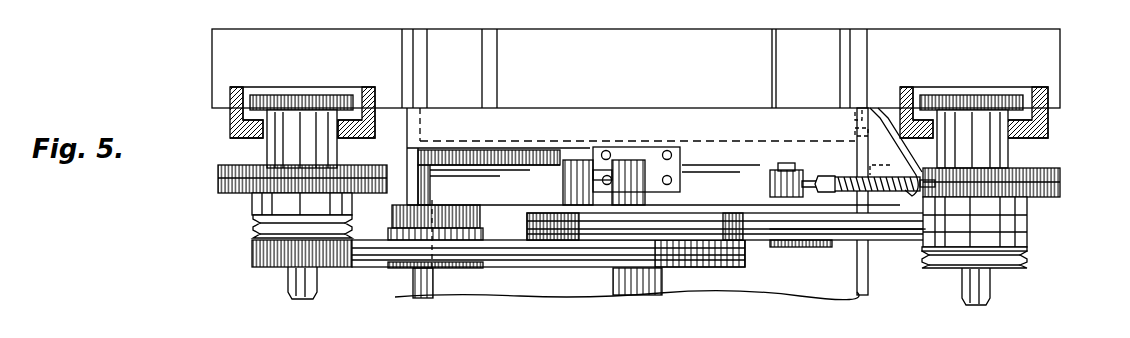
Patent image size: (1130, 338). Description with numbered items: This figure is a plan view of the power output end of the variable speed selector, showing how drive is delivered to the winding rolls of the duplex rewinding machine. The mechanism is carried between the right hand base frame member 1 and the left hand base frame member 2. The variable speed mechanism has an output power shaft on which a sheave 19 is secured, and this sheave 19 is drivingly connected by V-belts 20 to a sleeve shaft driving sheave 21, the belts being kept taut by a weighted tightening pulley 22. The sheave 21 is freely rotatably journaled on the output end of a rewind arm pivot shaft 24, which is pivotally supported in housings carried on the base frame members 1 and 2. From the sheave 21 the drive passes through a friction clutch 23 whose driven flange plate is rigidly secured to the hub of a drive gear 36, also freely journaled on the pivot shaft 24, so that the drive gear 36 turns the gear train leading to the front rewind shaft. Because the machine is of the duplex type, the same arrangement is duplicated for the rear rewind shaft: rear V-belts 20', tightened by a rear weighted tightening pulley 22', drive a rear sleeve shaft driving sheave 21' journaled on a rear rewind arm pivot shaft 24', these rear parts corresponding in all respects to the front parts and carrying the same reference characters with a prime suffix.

The base frame member 1 is at (1050, 50).
The base frame member 2 is at (1073, 180).
The drive gear 36 is at (277, 152).
The friction clutch 23 is at (236, 194).
The sleeve shaft driving sheave 21 is at (288, 268).
The rewind arm pivot shaft 24 is at (286, 287).
The weighted tightening pulley 22 is at (421, 251).
The V-belts 20 is at (710, 254).
The sheave 19 is at (621, 270).
The weighted tightening pulley 22' is at (801, 222).
The V-belts 20' is at (847, 255).
The rewind arm pivot shaft 24' is at (954, 286).
The sleeve shaft driving sheave 21' is at (987, 276).